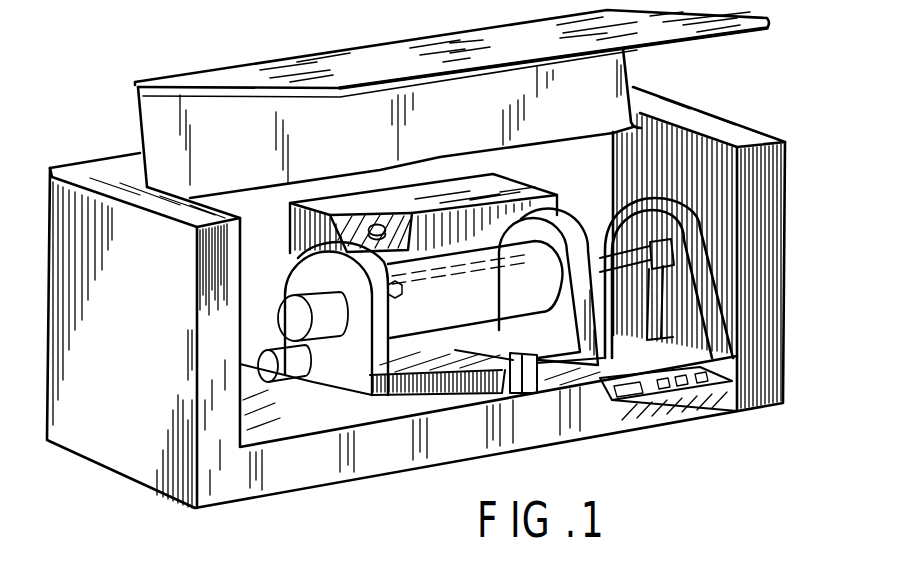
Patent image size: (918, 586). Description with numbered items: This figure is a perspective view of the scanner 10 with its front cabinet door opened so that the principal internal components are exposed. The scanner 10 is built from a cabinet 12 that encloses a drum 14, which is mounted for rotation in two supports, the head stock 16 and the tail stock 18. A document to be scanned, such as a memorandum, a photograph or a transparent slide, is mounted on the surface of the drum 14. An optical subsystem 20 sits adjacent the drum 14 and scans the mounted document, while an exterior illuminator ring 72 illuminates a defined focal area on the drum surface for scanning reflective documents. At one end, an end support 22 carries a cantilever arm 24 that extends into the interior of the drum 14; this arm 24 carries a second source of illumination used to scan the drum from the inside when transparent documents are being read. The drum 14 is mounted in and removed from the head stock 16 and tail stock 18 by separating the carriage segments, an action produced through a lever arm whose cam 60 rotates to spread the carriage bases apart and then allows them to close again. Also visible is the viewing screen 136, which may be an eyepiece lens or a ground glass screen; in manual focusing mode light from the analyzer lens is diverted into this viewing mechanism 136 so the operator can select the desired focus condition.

The scanner 10 is at (438, 295).
The cabinet 12 is at (773, 218).
The drum 14 is at (502, 300).
The head stock 16 is at (312, 285).
The tail stock 18 is at (533, 222).
The optical subsystem 20 is at (347, 200).
The end support 22 is at (677, 213).
The cantilever arm 24 is at (616, 252).
The cam 60 is at (293, 373).
The exterior illuminator ring 72 is at (403, 294).
The viewing screen 136 is at (380, 224).